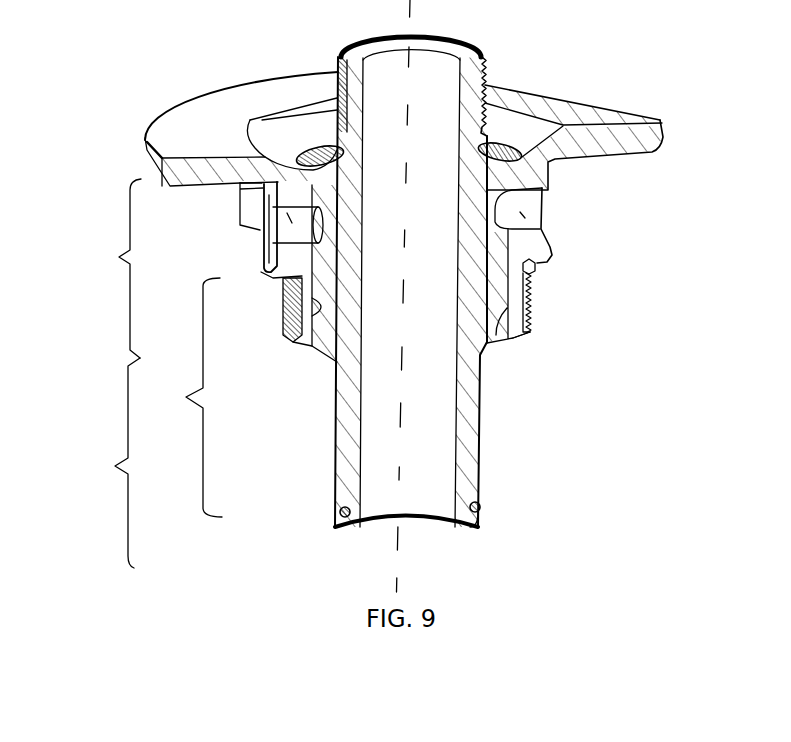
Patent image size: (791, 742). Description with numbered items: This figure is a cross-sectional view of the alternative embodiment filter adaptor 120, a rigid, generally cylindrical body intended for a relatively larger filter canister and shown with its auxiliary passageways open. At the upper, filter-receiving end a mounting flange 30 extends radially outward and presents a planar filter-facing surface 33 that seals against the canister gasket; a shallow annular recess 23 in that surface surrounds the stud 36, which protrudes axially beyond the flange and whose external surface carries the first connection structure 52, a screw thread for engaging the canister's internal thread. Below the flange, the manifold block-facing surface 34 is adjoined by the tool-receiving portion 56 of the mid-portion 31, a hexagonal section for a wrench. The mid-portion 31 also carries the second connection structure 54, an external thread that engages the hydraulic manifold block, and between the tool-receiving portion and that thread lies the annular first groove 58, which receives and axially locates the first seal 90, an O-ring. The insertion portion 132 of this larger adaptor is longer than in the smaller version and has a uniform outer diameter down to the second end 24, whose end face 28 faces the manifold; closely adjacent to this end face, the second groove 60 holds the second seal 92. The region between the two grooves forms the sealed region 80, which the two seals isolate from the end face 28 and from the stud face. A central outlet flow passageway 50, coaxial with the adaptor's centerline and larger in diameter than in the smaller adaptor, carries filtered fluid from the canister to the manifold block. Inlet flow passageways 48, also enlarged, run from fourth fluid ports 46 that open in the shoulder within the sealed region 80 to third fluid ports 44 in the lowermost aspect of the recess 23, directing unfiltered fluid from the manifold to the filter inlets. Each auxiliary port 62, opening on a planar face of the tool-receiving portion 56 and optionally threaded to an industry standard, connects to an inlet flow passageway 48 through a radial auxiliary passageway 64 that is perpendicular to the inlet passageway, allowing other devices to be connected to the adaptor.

The filter adaptor 120 is at (99, 92).
The tool-receiving portion 56 is at (457, 38).
The stud 36 is at (487, 64).
The first connection structure 52 is at (498, 86).
The filter-facing surface 33 is at (582, 102).
The mounting flange 30 is at (621, 133).
The manifold block-facing surface 34 is at (621, 155).
The annular recess 23 is at (506, 138).
The third fluid ports 44 is at (253, 112).
The auxiliary passageway 64 is at (240, 204).
The auxiliary ports 62 is at (261, 248).
The mid-portion 31 is at (110, 268).
The insertion portion 132 is at (100, 463).
The sealed region 80 is at (189, 397).
The inlet flow passageways 48 is at (283, 311).
The fourth fluid ports 46 is at (340, 355).
The first seal 90 is at (538, 266).
The first groove 58 is at (535, 271).
The second connection structure 54 is at (537, 308).
The outlet flow passageway 50 is at (455, 420).
The second groove 60 is at (478, 503).
The second seal 92 is at (479, 509).
The second end 24 is at (333, 532).
The end face 28 is at (350, 532).